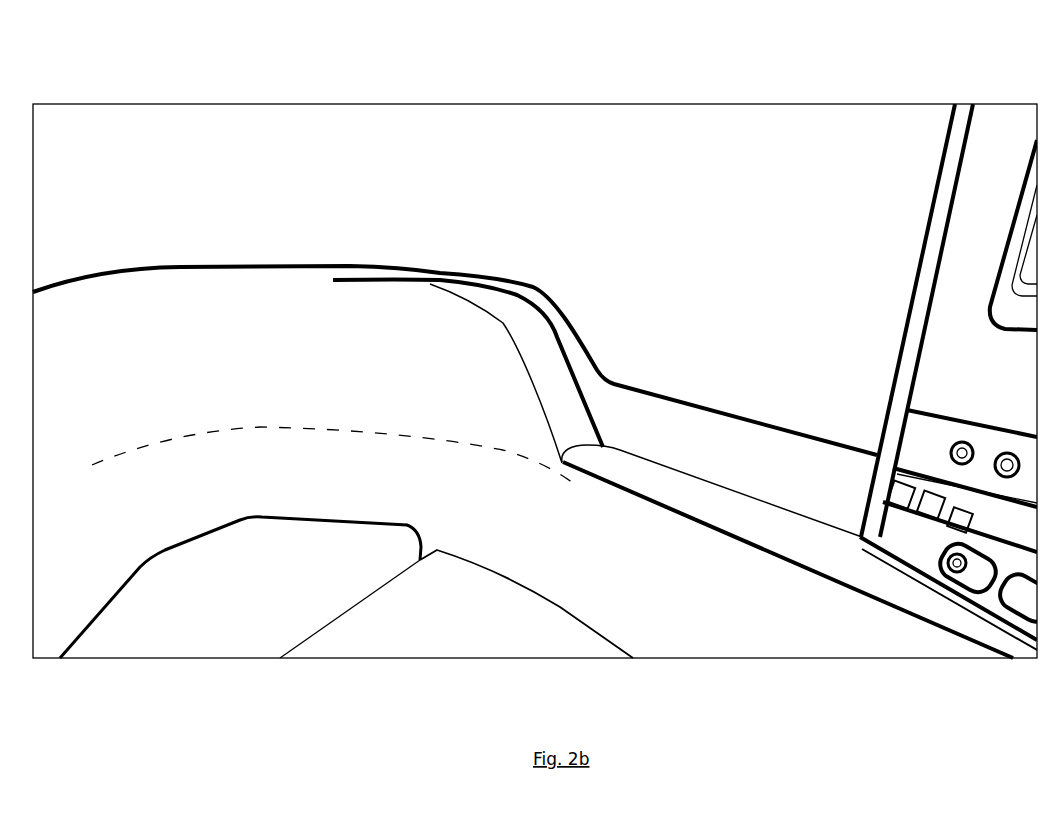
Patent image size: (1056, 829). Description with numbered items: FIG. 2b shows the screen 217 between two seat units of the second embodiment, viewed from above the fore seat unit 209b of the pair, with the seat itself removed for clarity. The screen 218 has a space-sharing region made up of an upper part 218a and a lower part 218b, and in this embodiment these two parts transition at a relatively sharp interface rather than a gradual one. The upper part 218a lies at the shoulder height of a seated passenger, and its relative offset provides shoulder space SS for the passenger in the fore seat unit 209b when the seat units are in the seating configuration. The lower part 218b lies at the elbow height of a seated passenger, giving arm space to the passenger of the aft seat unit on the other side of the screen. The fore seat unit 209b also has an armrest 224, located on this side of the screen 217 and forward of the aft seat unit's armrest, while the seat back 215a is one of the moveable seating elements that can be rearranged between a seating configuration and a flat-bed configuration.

The fore seat unit 209b is at (104, 163).
The screen 217 is at (760, 298).
The screen 218 is at (455, 247).
The upper part 218a is at (455, 330).
The lower part 218b is at (347, 382).
The armrest 224 is at (722, 523).
The seat back 215a is at (346, 587).
The shoulder space SS is at (471, 159).